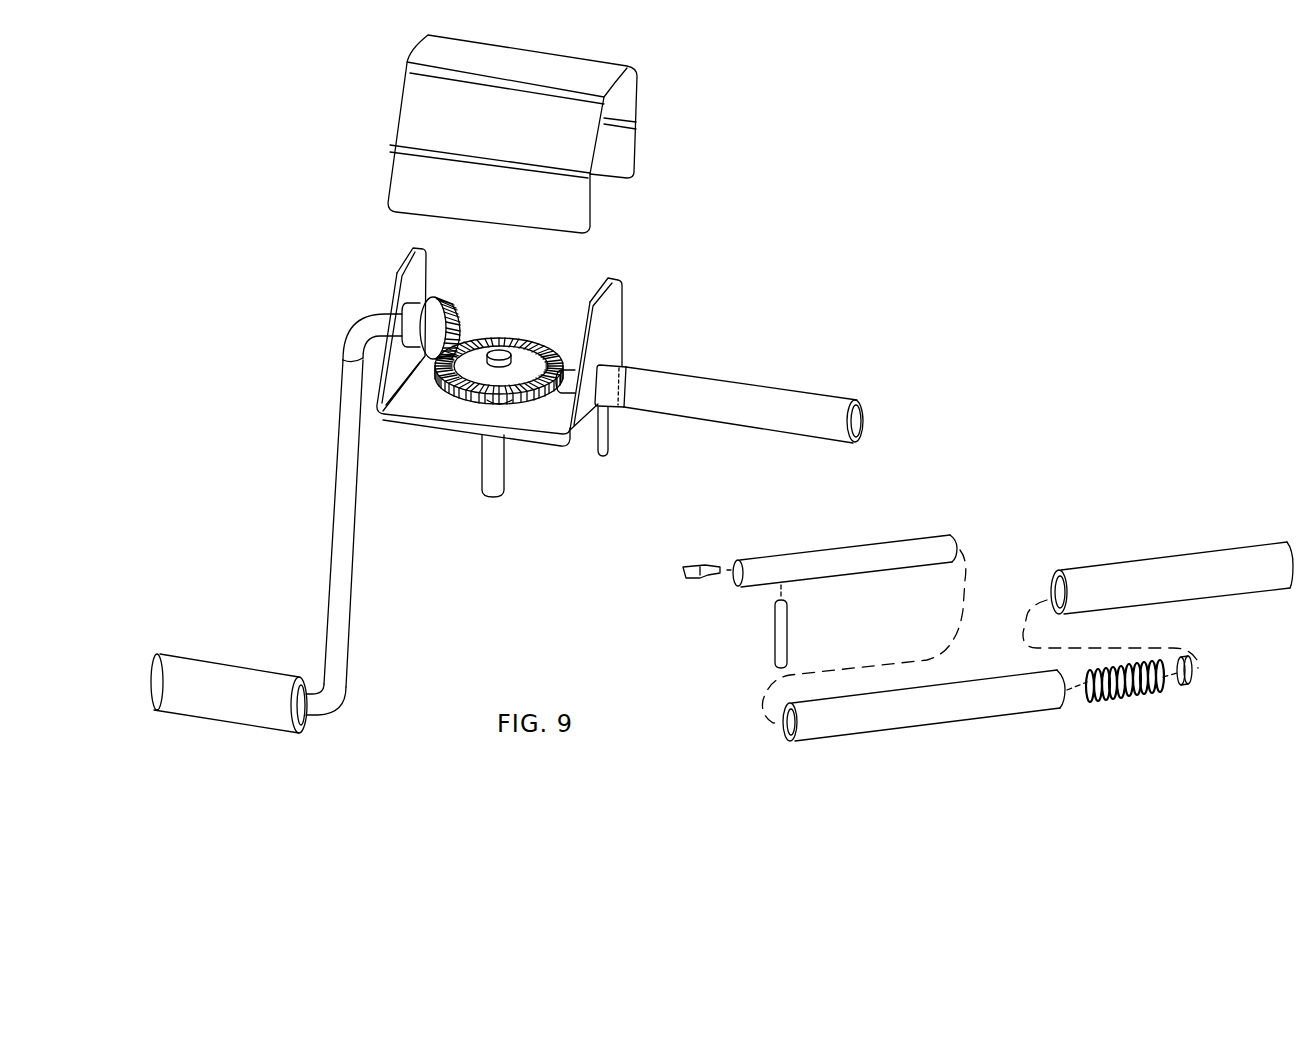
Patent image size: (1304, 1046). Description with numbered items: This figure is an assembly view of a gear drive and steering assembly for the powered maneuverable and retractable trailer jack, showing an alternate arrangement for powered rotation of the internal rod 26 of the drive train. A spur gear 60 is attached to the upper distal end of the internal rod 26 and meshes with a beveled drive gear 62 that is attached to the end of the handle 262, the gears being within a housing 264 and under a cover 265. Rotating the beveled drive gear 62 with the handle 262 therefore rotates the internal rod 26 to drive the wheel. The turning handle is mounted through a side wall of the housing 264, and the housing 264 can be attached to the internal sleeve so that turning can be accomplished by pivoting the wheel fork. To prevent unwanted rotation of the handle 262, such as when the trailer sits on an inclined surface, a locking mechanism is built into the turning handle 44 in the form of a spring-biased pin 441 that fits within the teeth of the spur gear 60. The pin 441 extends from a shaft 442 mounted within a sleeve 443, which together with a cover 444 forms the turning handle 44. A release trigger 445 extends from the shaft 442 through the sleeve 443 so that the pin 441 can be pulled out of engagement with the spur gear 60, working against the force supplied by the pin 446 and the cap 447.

The cover 265 is at (410, 113).
The housing 264 is at (397, 267).
The beveled drive gear 62 is at (432, 297).
The spur gear 60 is at (483, 337).
The internal rod 26 is at (480, 473).
The handle 262 is at (335, 500).
The turning handle 44 is at (763, 397).
The release trigger 445 is at (608, 445).
The spring-biased pin 441 is at (692, 578).
The shaft 442 is at (827, 558).
The sleeve 443 is at (922, 715).
The cover 444 is at (1153, 562).
The pin 446 is at (1120, 693).
The cap 447 is at (1193, 682).